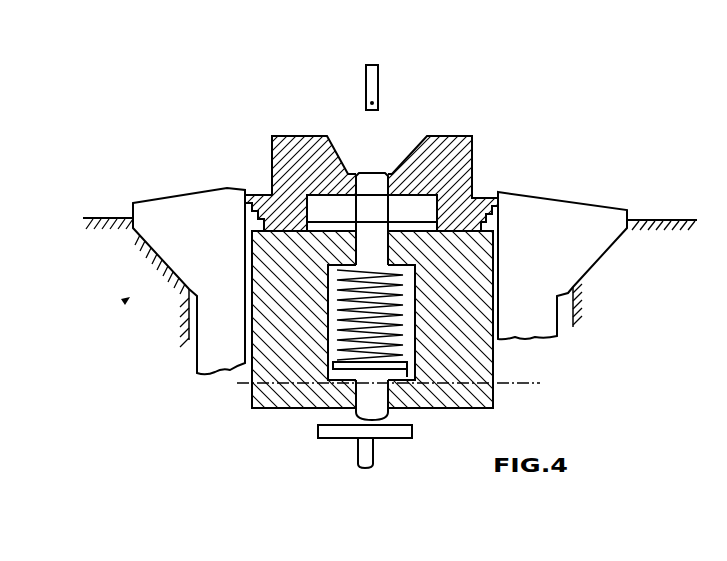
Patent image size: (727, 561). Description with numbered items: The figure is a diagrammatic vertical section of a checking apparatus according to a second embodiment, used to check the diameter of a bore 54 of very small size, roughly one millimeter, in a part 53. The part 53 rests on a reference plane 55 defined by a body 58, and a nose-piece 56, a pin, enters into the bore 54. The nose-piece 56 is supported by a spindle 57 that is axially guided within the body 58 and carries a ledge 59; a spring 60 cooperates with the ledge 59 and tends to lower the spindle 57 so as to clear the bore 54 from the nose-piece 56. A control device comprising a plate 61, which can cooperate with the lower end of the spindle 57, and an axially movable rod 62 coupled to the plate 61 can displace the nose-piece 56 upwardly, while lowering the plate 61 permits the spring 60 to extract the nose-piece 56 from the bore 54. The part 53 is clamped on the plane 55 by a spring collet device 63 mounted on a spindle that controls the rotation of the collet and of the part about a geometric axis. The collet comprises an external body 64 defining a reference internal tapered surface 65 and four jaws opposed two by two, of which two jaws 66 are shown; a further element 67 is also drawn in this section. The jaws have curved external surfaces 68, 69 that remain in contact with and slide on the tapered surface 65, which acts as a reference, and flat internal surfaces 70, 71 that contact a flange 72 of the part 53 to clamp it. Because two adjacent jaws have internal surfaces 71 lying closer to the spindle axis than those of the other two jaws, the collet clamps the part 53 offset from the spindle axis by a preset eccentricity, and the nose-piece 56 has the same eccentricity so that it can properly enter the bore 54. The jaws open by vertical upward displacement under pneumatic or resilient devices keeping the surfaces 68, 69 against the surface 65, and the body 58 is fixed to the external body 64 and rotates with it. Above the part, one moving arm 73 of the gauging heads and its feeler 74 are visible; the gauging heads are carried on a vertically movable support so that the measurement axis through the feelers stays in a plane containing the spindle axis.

The part 53 is at (470, 147).
The bore 54 is at (387, 168).
The reference plane 55 is at (245, 212).
The nose-piece 56 is at (370, 185).
The spindle 57 is at (358, 413).
The body 58 is at (495, 407).
The ledge 59 is at (410, 370).
The spring 60 is at (342, 338).
The plate 61 is at (412, 429).
The rod 62 is at (378, 450).
The spring collet device 63 is at (127, 300).
The external body 64 is at (92, 226).
The reference internal tapered surface 65 is at (132, 226).
The jaws 66 is at (176, 213).
The right wedge block 67 is at (573, 212).
The curved external surface 68 is at (190, 342).
The curved external surface 69 is at (566, 302).
The flat internal surface 70 is at (253, 192).
The flat internal surface 71 is at (495, 190).
The flange 72 is at (252, 193).
The moving arm 73 is at (374, 84).
The feeler 74 is at (373, 103).